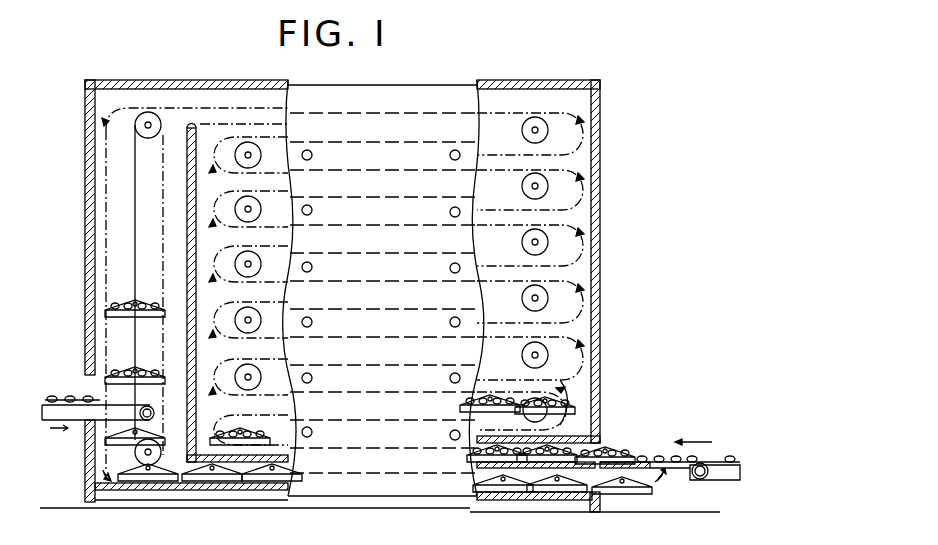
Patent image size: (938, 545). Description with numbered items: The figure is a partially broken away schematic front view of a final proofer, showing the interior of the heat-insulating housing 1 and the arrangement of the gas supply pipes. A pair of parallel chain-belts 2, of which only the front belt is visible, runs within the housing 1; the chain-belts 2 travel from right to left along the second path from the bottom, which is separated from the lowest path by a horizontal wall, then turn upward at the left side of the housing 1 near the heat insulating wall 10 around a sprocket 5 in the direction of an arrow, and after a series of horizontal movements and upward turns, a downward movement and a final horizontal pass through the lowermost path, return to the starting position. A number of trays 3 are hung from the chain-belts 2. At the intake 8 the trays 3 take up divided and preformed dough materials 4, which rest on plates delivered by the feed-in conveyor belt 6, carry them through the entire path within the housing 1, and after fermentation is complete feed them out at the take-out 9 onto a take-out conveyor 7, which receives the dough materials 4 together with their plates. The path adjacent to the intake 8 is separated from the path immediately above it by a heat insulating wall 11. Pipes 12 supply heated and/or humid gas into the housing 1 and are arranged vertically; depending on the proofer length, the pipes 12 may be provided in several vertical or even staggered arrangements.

The housing 1 is at (600, 148).
The chain-belts 2 is at (487, 110).
The trays 3 is at (128, 300).
The dough materials 4 is at (734, 460).
The sprocket 5 is at (535, 118).
The feed-in conveyor belt 6 is at (706, 440).
The take-out conveyor 7 is at (73, 425).
The intake 8 is at (592, 447).
The take-out 9 is at (90, 385).
The heat insulating wall 10 is at (189, 128).
The heat insulating wall 11 is at (528, 399).
The pipes 12 is at (312, 156).